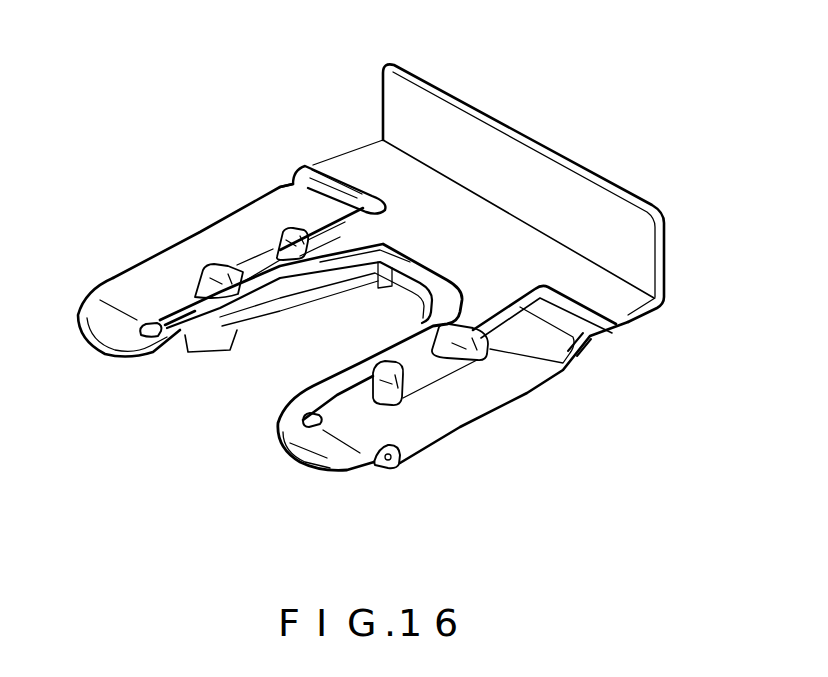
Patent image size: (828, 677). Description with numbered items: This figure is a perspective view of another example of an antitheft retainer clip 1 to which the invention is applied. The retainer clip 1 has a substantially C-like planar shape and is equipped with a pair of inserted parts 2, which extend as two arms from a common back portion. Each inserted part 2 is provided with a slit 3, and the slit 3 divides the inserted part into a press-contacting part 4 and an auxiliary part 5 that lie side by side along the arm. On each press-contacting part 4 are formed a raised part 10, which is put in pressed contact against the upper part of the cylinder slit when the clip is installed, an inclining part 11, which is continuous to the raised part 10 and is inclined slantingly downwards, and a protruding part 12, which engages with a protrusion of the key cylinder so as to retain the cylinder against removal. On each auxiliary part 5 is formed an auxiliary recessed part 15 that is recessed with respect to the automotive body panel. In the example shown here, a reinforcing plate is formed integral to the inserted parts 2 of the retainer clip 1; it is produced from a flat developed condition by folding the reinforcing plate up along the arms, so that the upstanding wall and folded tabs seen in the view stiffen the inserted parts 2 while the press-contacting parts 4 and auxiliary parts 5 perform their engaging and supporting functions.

The retainer clip 1 is at (561, 108).
The inserted part 2 is at (482, 436).
The slit 3 is at (303, 428).
The press-contacting part 4 is at (228, 308).
The auxiliary part 5 is at (377, 430).
The raised part 10 is at (275, 267).
The inclining part 11 is at (157, 323).
The protruding part 12 is at (189, 298).
The auxiliary recessed part 15 is at (525, 391).